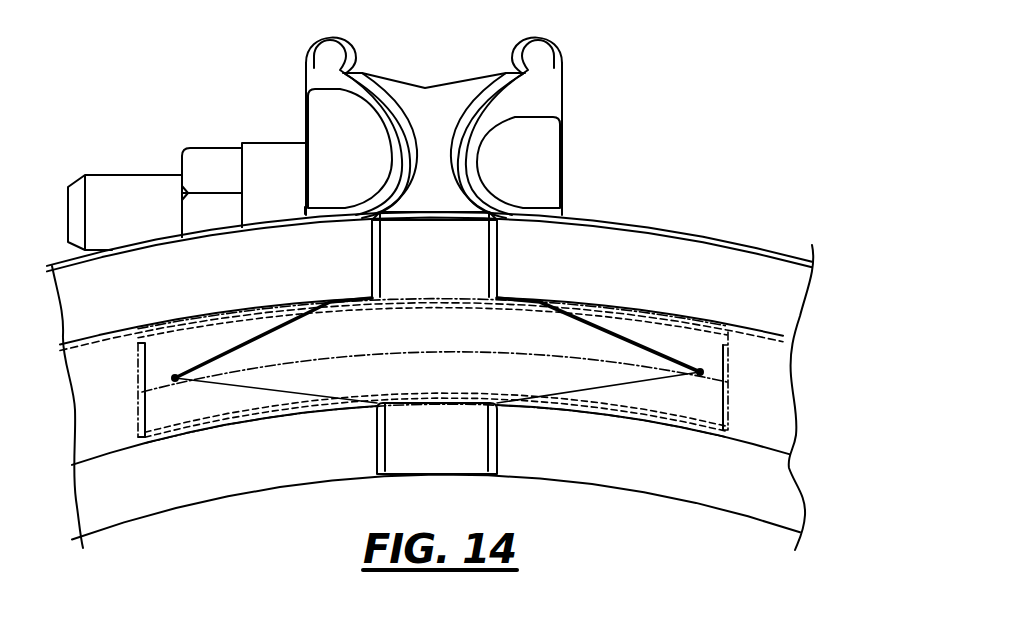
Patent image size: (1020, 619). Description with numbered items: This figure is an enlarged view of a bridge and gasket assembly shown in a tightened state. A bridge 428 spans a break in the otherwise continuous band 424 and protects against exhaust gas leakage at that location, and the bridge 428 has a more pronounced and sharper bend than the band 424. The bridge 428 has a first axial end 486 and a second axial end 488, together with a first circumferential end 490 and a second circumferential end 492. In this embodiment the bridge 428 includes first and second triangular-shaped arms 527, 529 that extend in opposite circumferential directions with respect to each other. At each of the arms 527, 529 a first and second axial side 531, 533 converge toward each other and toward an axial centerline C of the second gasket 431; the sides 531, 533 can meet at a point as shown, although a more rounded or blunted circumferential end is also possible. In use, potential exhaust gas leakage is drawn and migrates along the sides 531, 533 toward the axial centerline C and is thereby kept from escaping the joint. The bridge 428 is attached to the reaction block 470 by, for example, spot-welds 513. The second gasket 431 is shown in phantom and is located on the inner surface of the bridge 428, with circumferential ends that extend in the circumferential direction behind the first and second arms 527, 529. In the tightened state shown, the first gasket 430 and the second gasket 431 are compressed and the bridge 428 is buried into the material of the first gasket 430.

The band 424 is at (430, 367).
The bridge 428 is at (496, 257).
The first gasket 430 is at (160, 443).
The second gasket 431 is at (465, 400).
The reaction block 470 is at (431, 107).
The first axial end 486 is at (500, 239).
The second axial end 488 is at (458, 456).
The first circumferential end 490 is at (175, 378).
The second circumferential end 492 is at (700, 372).
The spot-welds 513 is at (492, 346).
The first triangular-shaped arm 527 is at (250, 362).
The second triangular-shaped arm 529 is at (598, 338).
The first axial side 531 is at (210, 355).
The second axial side 533 is at (240, 392).
The axial centerline C is at (434, 369).